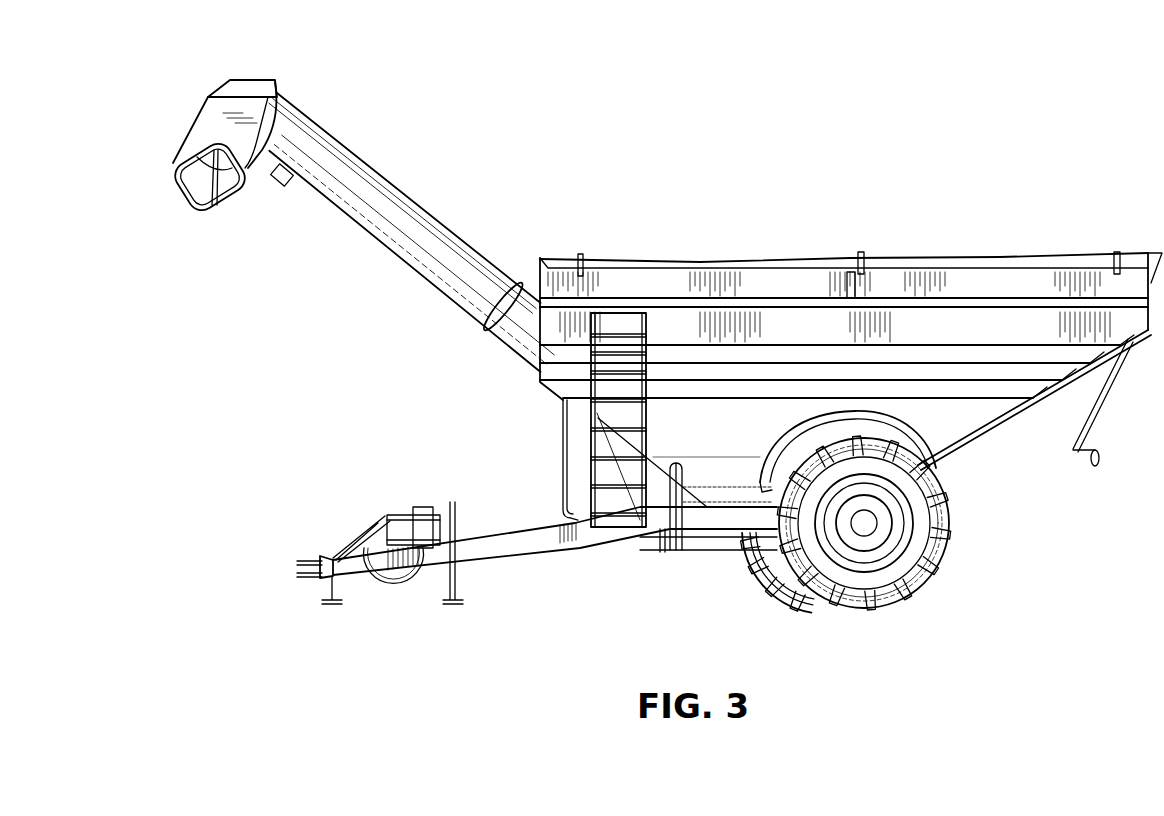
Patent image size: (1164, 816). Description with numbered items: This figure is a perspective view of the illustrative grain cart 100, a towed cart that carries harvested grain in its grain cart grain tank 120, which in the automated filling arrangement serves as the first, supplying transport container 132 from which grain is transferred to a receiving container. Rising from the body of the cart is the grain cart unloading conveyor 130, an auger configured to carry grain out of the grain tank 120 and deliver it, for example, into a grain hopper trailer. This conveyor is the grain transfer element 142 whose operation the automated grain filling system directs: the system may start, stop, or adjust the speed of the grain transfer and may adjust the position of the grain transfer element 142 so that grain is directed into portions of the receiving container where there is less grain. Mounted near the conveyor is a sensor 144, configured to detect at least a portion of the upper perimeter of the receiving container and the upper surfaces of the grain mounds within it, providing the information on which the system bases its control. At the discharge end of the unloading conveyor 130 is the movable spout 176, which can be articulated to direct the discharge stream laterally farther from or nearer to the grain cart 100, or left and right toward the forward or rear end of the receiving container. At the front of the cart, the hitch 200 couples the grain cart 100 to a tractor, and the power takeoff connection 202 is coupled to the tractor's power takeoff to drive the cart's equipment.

The grain cart 100 is at (908, 71).
The grain cart grain tank 120 is at (851, 369).
The supplying transport container 132 is at (1010, 283).
The grain cart unloading conveyor 130 is at (350, 174).
The grain transfer element 142 is at (324, 130).
The sensor 144 is at (271, 182).
The movable spout 176 is at (206, 126).
The hitch 200 is at (322, 557).
The power takeoff connection 202 is at (352, 551).